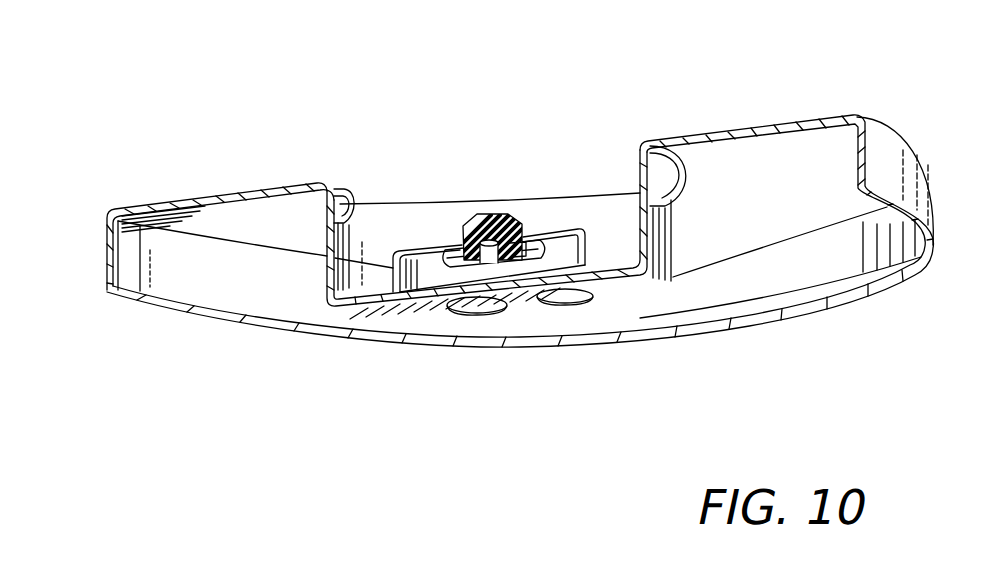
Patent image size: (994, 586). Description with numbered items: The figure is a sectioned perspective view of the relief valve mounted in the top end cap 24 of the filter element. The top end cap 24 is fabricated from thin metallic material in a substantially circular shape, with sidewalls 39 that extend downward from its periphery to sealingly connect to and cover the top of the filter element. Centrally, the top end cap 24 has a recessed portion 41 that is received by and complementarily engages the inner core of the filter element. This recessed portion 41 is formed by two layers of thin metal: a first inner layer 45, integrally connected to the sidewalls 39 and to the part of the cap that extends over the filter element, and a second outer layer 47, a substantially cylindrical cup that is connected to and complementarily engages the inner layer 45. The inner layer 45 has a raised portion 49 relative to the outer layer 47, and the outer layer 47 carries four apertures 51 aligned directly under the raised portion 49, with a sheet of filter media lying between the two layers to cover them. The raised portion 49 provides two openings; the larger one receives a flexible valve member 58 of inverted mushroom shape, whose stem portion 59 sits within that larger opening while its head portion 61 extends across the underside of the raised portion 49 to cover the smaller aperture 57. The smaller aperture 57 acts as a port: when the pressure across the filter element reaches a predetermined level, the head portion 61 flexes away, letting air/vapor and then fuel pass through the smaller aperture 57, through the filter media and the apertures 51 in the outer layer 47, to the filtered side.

The top end cap 24 is at (747, 127).
The sidewalls 39 is at (884, 150).
The recessed portion 41 is at (607, 183).
The inner layer 45 is at (351, 204).
The outer layer 47 is at (668, 243).
The raised portion 49 is at (398, 250).
The apertures 51 is at (572, 303).
The smaller aperture 57 is at (524, 236).
The flexible valve member 58 is at (487, 210).
The stem portion 59 is at (521, 238).
The head portion 61 is at (460, 252).